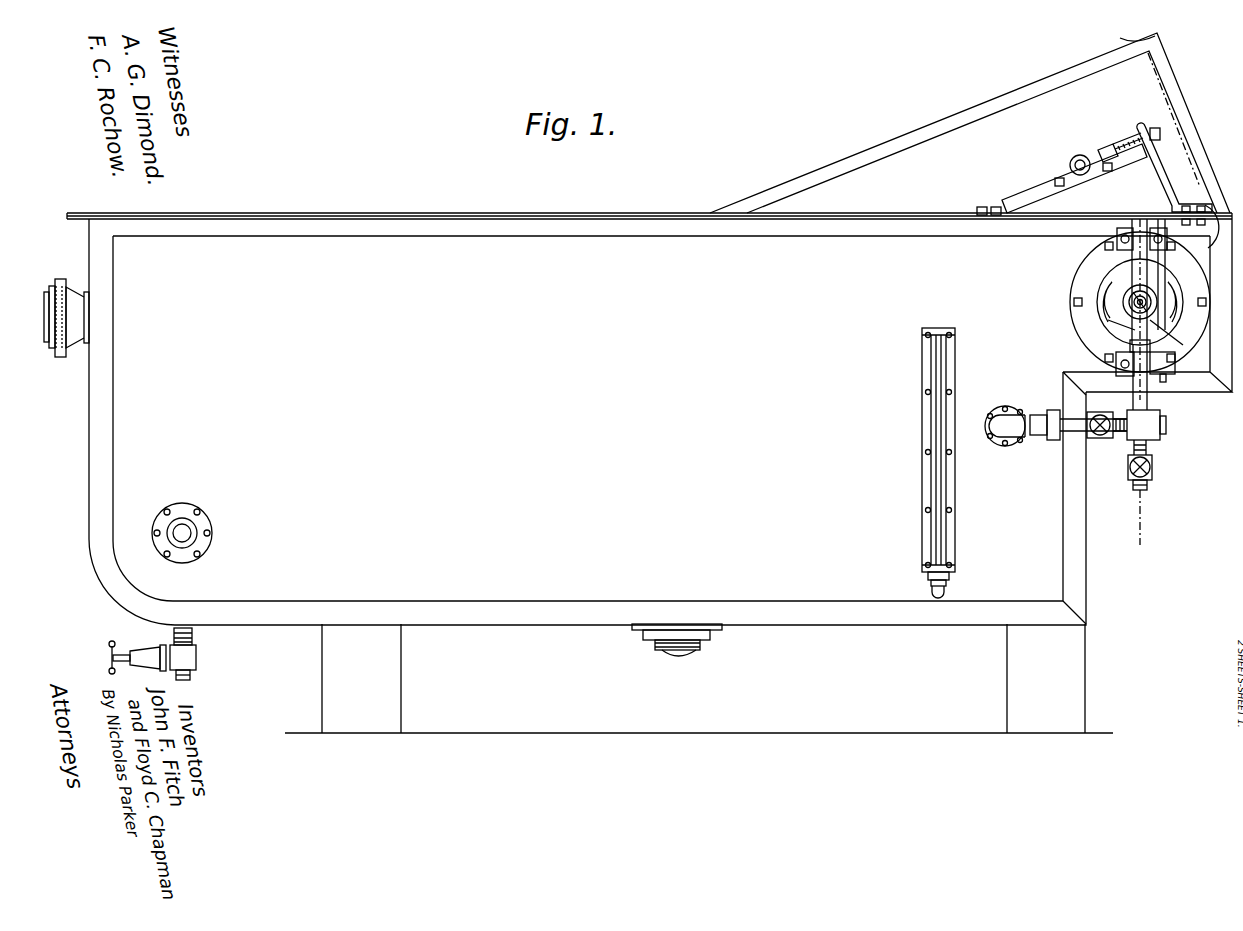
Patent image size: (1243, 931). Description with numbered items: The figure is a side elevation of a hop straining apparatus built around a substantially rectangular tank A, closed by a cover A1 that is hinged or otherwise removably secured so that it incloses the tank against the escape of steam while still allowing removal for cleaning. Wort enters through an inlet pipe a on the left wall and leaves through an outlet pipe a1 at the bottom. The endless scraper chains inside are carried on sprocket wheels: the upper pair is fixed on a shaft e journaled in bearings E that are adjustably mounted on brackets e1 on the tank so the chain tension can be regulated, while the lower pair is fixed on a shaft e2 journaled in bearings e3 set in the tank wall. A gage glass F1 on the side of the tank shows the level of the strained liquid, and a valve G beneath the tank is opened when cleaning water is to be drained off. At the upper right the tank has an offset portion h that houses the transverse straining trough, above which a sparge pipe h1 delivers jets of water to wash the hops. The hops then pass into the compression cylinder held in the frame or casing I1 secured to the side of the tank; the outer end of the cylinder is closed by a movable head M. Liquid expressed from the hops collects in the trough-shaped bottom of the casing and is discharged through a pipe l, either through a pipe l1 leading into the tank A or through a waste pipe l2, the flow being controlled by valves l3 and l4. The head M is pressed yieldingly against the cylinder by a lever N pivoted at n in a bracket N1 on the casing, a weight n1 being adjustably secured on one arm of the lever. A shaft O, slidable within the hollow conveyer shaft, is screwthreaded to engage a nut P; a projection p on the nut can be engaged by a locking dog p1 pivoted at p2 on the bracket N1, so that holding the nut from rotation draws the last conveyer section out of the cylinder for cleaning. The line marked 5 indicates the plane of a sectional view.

The tank A is at (649, 383).
The top flange of tank A1 is at (558, 212).
The inlet flange a is at (72, 292).
The drain outlet a1 is at (700, 648).
The pivot roller e is at (1082, 160).
The lever arm e1 is at (1168, 180).
The opening e2 is at (184, 537).
The flange e3 is at (192, 526).
The bracket E is at (1062, 172).
The gauge F1 is at (936, 378).
The drain valve G is at (206, 649).
The housing h is at (1207, 378).
The hinge h1 is at (1190, 193).
The disk I1 is at (1088, 320).
The pipe fitting l is at (1150, 400).
The pipe l1 is at (1036, 420).
The pipe l2 is at (1147, 486).
The valve l3 is at (1100, 440).
The valve l4 is at (1152, 466).
The ring M is at (1102, 294).
The rod n is at (1125, 230).
The block n1 is at (1145, 375).
The cam segment N is at (1125, 270).
The cam segment N1 is at (1165, 280).
The hub O is at (1128, 318).
The shaft P is at (1150, 308).
The pin p is at (1133, 294).
The arm p1 is at (1120, 332).
The arm p2 is at (1185, 345).
The section line 5 is at (1130, 292).